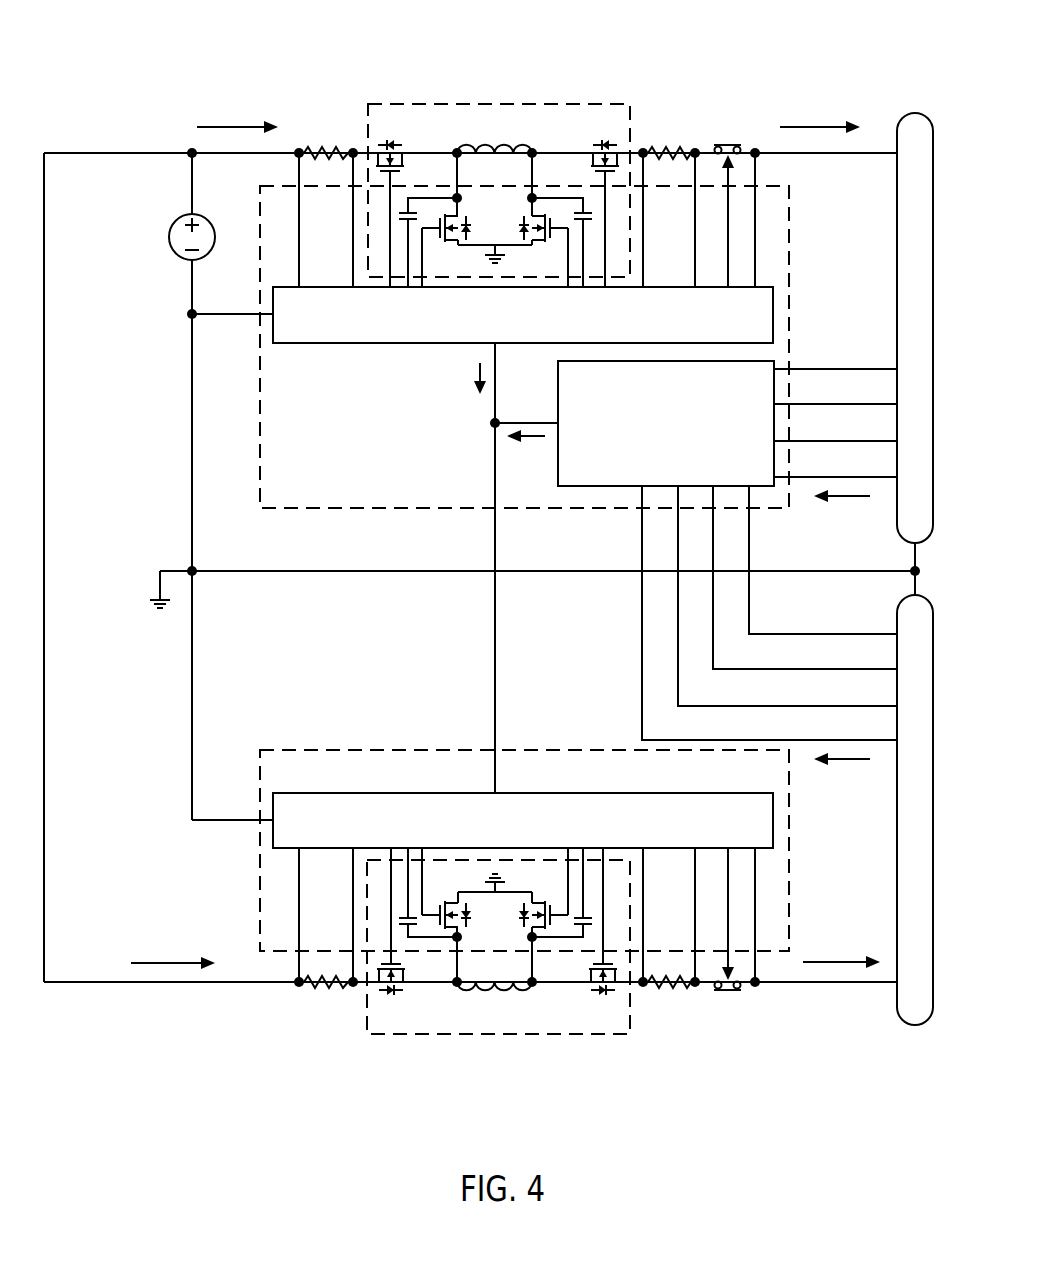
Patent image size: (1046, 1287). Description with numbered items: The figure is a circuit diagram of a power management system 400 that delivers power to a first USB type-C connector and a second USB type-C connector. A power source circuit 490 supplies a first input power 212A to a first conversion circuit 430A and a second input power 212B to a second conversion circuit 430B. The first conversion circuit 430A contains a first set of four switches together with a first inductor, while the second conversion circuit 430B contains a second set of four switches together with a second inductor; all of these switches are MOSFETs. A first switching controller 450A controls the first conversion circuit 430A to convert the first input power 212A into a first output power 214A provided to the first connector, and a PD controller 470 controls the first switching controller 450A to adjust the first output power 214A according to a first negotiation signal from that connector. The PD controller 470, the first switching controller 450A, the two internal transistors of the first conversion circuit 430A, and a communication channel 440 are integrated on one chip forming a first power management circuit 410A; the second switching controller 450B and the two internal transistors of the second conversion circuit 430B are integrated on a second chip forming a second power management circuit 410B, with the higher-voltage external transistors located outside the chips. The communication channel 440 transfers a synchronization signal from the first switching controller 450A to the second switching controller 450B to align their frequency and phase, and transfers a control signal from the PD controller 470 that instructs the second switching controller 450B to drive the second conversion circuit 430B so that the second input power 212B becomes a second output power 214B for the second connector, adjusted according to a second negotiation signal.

The power management system 400 is at (195, 58).
The first input power 212A is at (233, 127).
The second input power 212B is at (183, 947).
The first output power 214A is at (826, 110).
The second output power 214B is at (853, 946).
The power source circuit 490 is at (168, 243).
The first conversion circuit 430A is at (470, 104).
The second conversion circuit 430B is at (470, 1034).
The first power management circuit 410A is at (385, 508).
The second power management circuit 410B is at (385, 750).
The first switching controller 450A is at (372, 343).
The second switching controller 450B is at (650, 793).
The PD controller 470 is at (557, 410).
The communication channel 440 is at (495, 660).